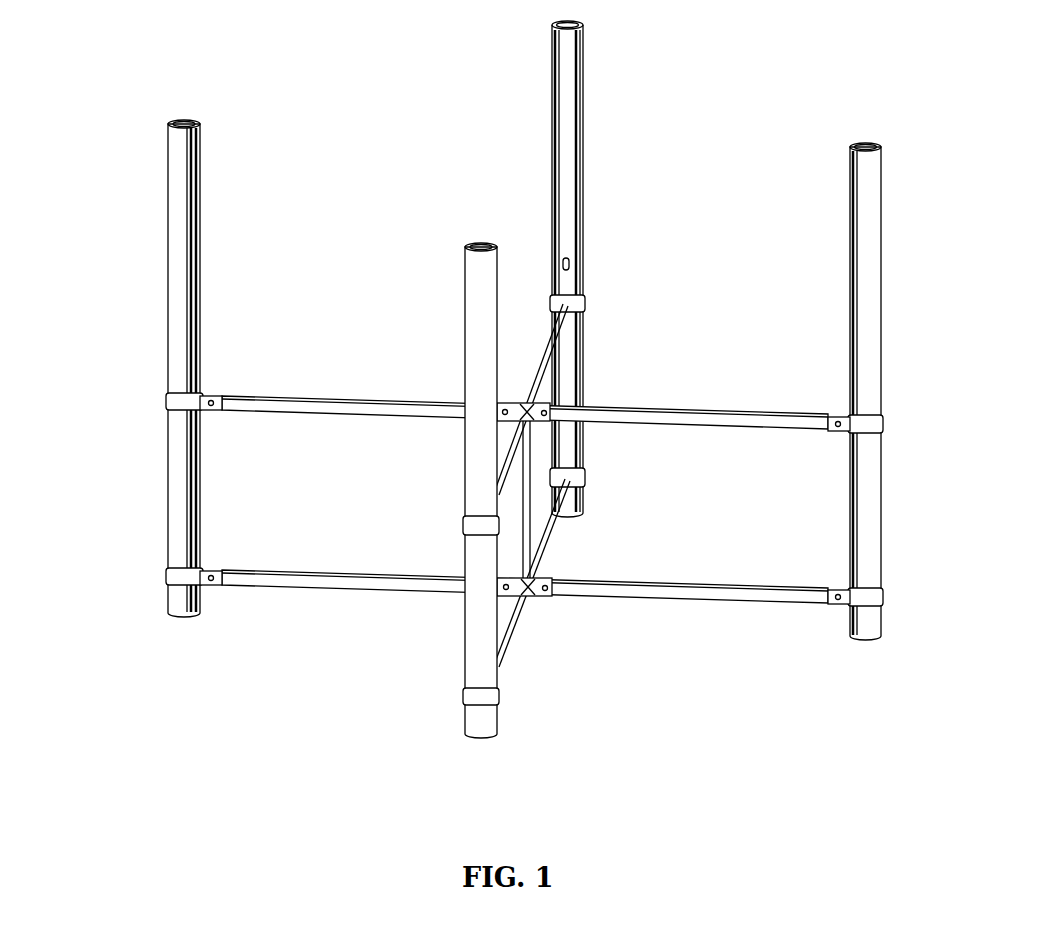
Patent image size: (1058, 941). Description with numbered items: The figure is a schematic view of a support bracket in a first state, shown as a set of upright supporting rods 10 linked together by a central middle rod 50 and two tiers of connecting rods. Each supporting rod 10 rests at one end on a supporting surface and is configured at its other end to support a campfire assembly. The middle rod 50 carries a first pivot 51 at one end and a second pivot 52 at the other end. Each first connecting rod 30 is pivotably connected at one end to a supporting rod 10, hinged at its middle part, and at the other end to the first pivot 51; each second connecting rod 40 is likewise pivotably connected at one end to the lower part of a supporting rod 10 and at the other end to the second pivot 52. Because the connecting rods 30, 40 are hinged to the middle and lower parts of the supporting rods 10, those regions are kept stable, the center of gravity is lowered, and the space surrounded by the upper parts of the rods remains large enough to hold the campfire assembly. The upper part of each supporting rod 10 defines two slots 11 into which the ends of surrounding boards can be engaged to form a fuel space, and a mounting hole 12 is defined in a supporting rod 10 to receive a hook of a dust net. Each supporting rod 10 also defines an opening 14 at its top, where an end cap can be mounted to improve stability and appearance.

The supporting rod 10 is at (185, 497).
The slot 11 is at (578, 105).
The mounting hole 12 is at (572, 265).
The opening 14 is at (470, 246).
The first connecting rod 30 is at (808, 422).
The second connecting rod 40 is at (818, 590).
The middle rod 50 is at (528, 543).
The first pivot 51 is at (535, 405).
The second pivot 52 is at (533, 590).